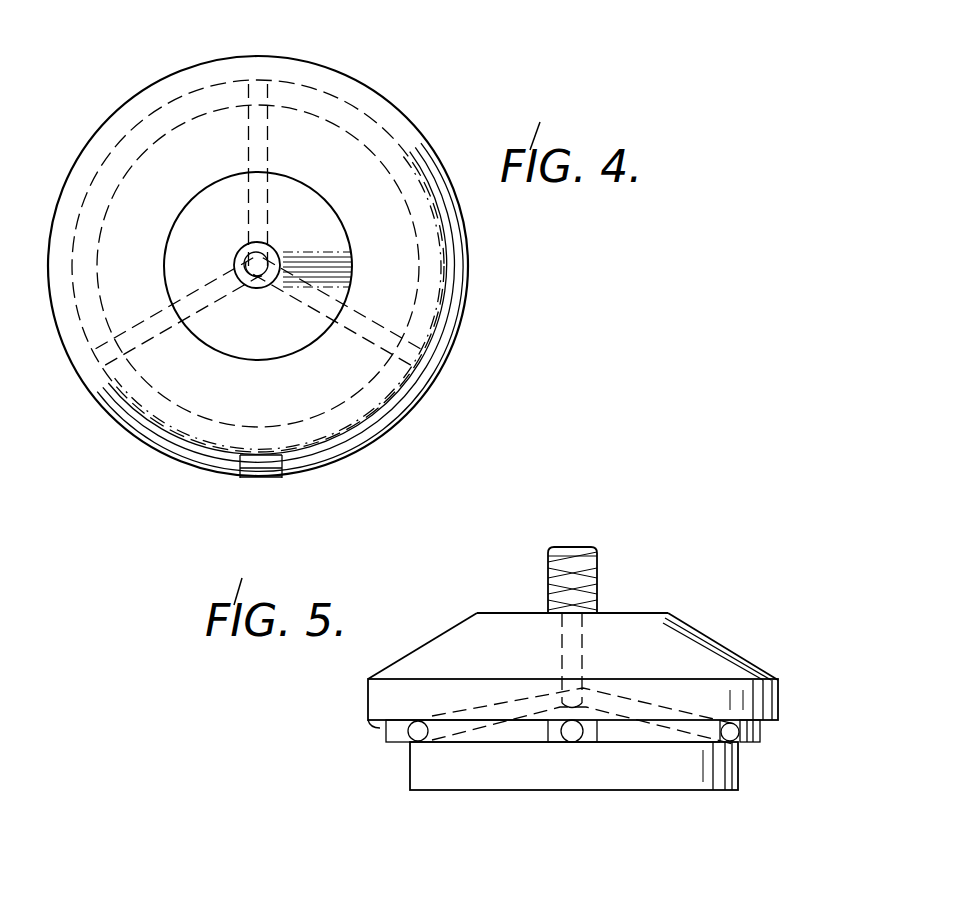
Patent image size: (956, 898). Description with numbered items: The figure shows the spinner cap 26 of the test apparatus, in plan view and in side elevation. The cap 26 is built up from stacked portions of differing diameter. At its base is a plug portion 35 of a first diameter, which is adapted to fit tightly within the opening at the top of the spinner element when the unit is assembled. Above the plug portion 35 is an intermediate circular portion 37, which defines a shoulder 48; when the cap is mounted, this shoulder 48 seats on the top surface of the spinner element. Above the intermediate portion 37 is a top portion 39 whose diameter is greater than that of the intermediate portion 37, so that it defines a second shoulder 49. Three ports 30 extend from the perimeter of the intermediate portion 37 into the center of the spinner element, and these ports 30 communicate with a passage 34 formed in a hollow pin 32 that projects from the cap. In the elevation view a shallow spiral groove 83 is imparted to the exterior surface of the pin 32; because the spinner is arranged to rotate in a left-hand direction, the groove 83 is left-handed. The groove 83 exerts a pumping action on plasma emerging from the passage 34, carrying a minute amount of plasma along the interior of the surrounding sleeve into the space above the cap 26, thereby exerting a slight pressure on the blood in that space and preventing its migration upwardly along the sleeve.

In FIG. 4, the spinner cap 26 is at (418, 120).
In FIG. 5, the spinner cap 26 is at (724, 634).
In FIG. 4, the ports 30 is at (240, 117).
In FIG. 5, the ports 30 is at (633, 705).
In FIG. 5, the hollow pin 32 is at (598, 562).
In FIG. 4, the passage 34 is at (258, 288).
In FIG. 5, the passage 34 is at (583, 548).
In FIG. 5, the plug portion 35 is at (655, 780).
In FIG. 5, the intermediate circular portion 37 is at (386, 738).
In FIG. 5, the top portion 39 is at (780, 697).
In FIG. 5, the shoulder 48 is at (748, 744).
In FIG. 5, the second shoulder 49 is at (370, 722).
In FIG. 5, the spiral groove 83 is at (548, 572).